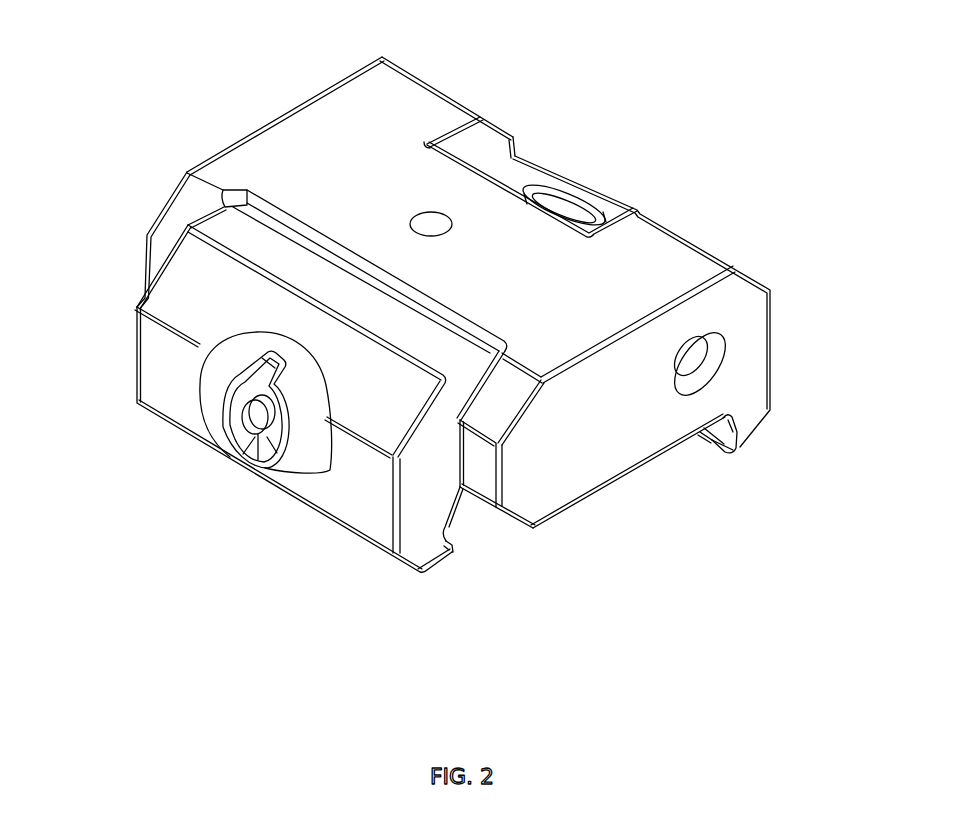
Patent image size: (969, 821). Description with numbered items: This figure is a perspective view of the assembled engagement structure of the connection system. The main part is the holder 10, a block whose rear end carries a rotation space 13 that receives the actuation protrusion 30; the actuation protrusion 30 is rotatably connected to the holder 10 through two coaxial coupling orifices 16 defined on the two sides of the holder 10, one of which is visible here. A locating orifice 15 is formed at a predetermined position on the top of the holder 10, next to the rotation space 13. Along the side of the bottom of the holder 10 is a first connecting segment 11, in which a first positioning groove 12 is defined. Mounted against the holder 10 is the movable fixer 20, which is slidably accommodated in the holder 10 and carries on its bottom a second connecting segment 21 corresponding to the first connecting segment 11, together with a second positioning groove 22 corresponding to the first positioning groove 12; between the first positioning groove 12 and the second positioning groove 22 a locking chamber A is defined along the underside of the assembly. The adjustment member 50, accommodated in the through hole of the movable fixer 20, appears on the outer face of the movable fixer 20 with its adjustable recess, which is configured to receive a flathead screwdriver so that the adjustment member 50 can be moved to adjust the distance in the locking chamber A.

The holder 10 is at (506, 320).
The first connecting segment 11 is at (744, 447).
The first positioning groove 12 is at (700, 443).
The rotation space 13 is at (480, 150).
The locating orifice 15 is at (420, 212).
The coupling orifice 16 is at (692, 356).
The movable fixer 20 is at (285, 443).
The second connecting segment 21 is at (447, 560).
The second positioning groove 22 is at (447, 533).
The actuation protrusion 30 is at (553, 182).
The adjustment member 50 is at (305, 430).
The locking chamber A is at (603, 503).